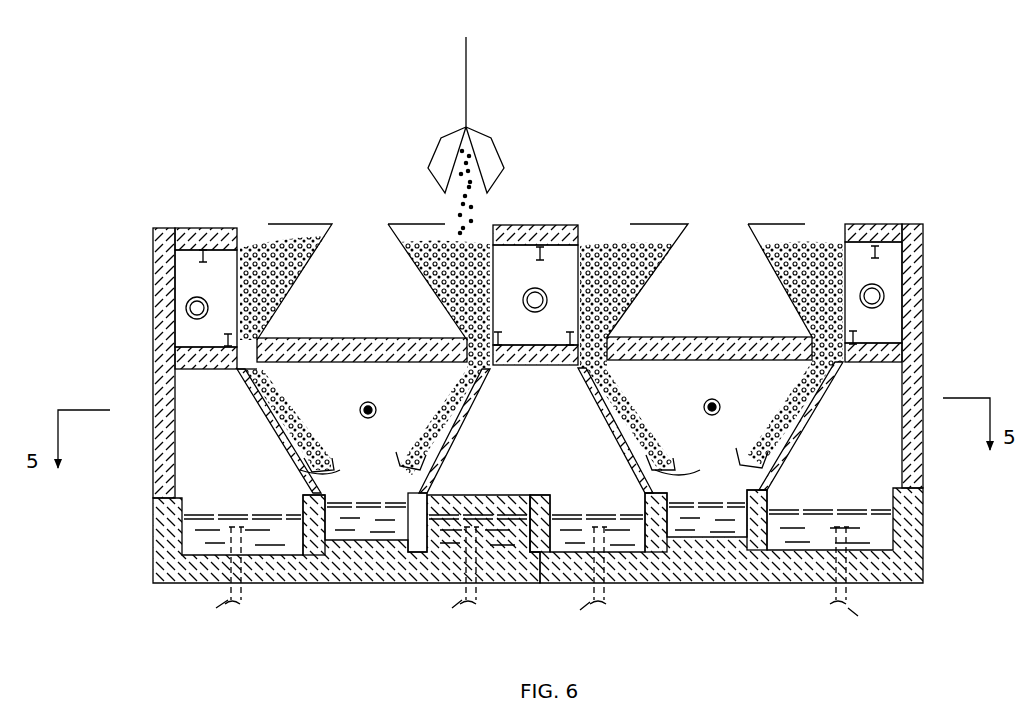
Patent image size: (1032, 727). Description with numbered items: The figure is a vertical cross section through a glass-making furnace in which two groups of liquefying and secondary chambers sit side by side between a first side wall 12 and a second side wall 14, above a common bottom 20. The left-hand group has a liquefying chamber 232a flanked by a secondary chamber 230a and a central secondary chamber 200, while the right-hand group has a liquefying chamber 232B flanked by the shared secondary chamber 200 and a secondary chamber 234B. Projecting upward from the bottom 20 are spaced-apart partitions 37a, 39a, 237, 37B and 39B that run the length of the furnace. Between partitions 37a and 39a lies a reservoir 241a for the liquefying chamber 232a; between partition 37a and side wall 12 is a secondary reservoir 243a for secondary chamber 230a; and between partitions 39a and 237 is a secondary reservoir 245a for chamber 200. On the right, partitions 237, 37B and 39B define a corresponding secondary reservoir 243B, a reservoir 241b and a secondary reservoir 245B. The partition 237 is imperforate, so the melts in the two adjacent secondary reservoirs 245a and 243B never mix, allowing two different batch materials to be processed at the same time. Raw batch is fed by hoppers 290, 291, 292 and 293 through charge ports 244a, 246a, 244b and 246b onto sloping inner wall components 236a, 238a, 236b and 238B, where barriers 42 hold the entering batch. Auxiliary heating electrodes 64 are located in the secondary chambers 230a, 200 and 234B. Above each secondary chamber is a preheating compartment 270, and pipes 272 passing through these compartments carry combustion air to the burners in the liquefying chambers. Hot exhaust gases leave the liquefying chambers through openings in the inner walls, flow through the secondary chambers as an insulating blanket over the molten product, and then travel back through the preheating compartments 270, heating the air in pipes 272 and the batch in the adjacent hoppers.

The first side wall 12 is at (160, 541).
The second side wall 14 is at (905, 516).
The bottom 20 is at (602, 594).
The auxiliary heating electrodes 64 is at (266, 590).
The secondary chamber 200 is at (548, 412).
The secondary chamber 230a is at (175, 445).
The secondary chamber 234B is at (905, 373).
The preheating compartment 270 is at (196, 278).
The pipes 272 is at (188, 309).
The liquefying chamber 232a is at (354, 358).
The liquefying chamber 232B is at (706, 358).
The hopper 290 is at (303, 262).
The hopper 291 is at (440, 300).
The hopper 292 is at (648, 296).
The hopper 293 is at (815, 278).
The charge port 244a is at (258, 362).
The charge port 246a is at (464, 344).
The charge port 244b is at (612, 370).
The charge port 246b is at (822, 364).
The inner wall component 236a is at (285, 448).
The inner wall component 238a is at (446, 436).
The sloping wall 236b is at (614, 420).
The sloping wall 238B is at (818, 420).
The barriers 42 is at (400, 462).
The secondary reservoir 243a is at (250, 506).
The reservoir 241a is at (392, 518).
The secondary reservoir 245a is at (480, 536).
The secondary reservoir 243B is at (600, 536).
The reservoir 241b is at (736, 518).
The secondary reservoir 245B is at (832, 533).
The partition 37a is at (312, 496).
The partition 237 is at (540, 496).
The partition 37B is at (648, 492).
The partition 39a is at (427, 512).
The partition 39B is at (775, 490).